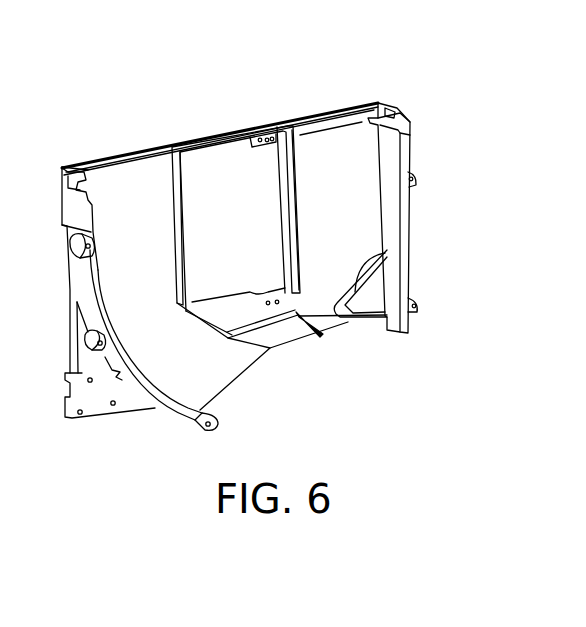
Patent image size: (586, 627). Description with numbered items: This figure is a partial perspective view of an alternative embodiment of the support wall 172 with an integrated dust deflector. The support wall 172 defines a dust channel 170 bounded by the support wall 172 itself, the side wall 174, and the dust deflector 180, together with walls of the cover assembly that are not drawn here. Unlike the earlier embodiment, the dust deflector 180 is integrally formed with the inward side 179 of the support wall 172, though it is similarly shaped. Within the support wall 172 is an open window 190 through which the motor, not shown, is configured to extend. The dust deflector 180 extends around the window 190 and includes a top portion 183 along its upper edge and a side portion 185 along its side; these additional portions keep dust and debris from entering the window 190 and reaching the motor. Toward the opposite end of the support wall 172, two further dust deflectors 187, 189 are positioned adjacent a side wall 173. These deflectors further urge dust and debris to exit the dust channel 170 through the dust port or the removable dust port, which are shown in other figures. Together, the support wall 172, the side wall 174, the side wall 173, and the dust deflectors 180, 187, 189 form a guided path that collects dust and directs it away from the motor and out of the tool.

The support wall 172 is at (97, 86).
The dust channel 170 is at (118, 215).
The side wall 174 is at (148, 405).
The top portion 183 is at (233, 130).
The inward side 179 is at (315, 142).
The dust deflector 180 is at (188, 206).
The side portion 185 is at (298, 207).
The open window 190 is at (270, 248).
The side wall 173 is at (410, 205).
The dust deflector 187 is at (370, 267).
The dust deflector 189 is at (352, 325).